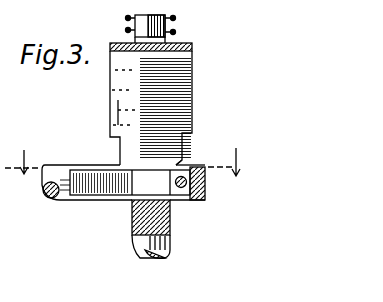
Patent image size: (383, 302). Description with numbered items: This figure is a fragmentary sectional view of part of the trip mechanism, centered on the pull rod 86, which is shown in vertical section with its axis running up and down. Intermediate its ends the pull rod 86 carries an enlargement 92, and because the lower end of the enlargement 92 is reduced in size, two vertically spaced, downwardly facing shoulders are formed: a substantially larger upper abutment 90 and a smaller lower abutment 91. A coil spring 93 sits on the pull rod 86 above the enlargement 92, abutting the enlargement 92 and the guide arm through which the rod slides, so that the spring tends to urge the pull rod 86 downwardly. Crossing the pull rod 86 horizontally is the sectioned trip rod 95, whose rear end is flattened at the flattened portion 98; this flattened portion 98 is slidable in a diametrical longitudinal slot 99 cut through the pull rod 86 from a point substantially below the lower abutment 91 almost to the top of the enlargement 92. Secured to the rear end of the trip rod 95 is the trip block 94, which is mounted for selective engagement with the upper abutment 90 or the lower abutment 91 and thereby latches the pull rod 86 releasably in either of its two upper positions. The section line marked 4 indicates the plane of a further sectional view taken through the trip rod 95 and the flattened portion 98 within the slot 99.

The pull rod 86 is at (171, 248).
The upper abutment 90 is at (192, 128).
The lower abutment 91 is at (183, 162).
The enlargement 92 is at (192, 46).
The coil spring 93 is at (176, 16).
The trip block 94 is at (204, 201).
The trip rod 95 is at (63, 195).
The flattened portion 98 is at (97, 188).
The longitudinal slot 99 is at (118, 113).
The section line 4- 4 is at (130, 159).